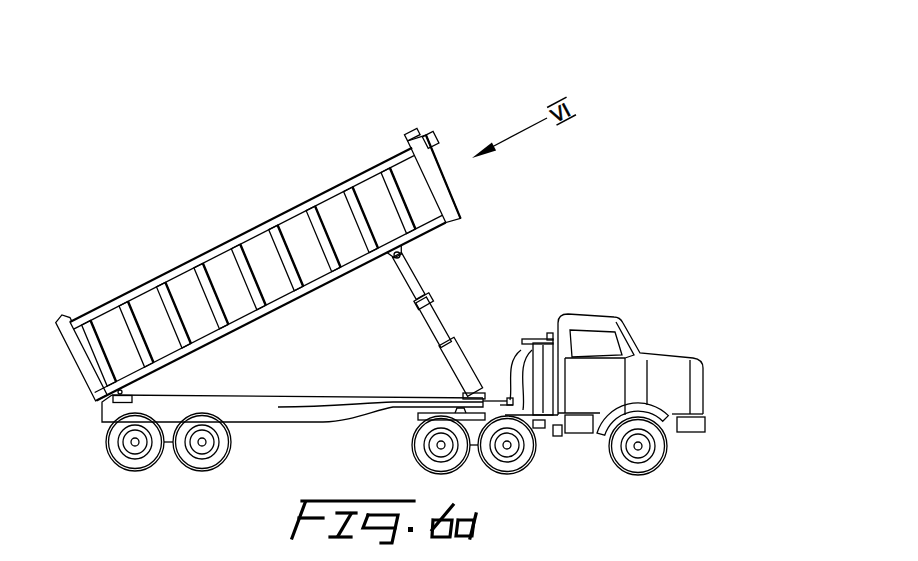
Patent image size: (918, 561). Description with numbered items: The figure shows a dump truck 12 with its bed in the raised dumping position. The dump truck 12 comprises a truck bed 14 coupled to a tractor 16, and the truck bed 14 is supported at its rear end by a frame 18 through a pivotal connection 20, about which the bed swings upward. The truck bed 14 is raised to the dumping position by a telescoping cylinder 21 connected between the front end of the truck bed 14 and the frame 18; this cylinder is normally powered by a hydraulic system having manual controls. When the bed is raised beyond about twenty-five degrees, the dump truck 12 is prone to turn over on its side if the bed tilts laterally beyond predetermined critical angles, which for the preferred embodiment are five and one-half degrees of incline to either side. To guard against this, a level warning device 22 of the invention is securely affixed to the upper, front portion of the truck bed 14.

The dump truck 12 is at (538, 278).
The truck bed 14 is at (426, 205).
The tractor 16 is at (653, 354).
The frame 18 is at (296, 397).
The pivotal connection 20 is at (130, 391).
The hoist cylinder 21 is at (421, 298).
The level warning device 22 is at (431, 125).